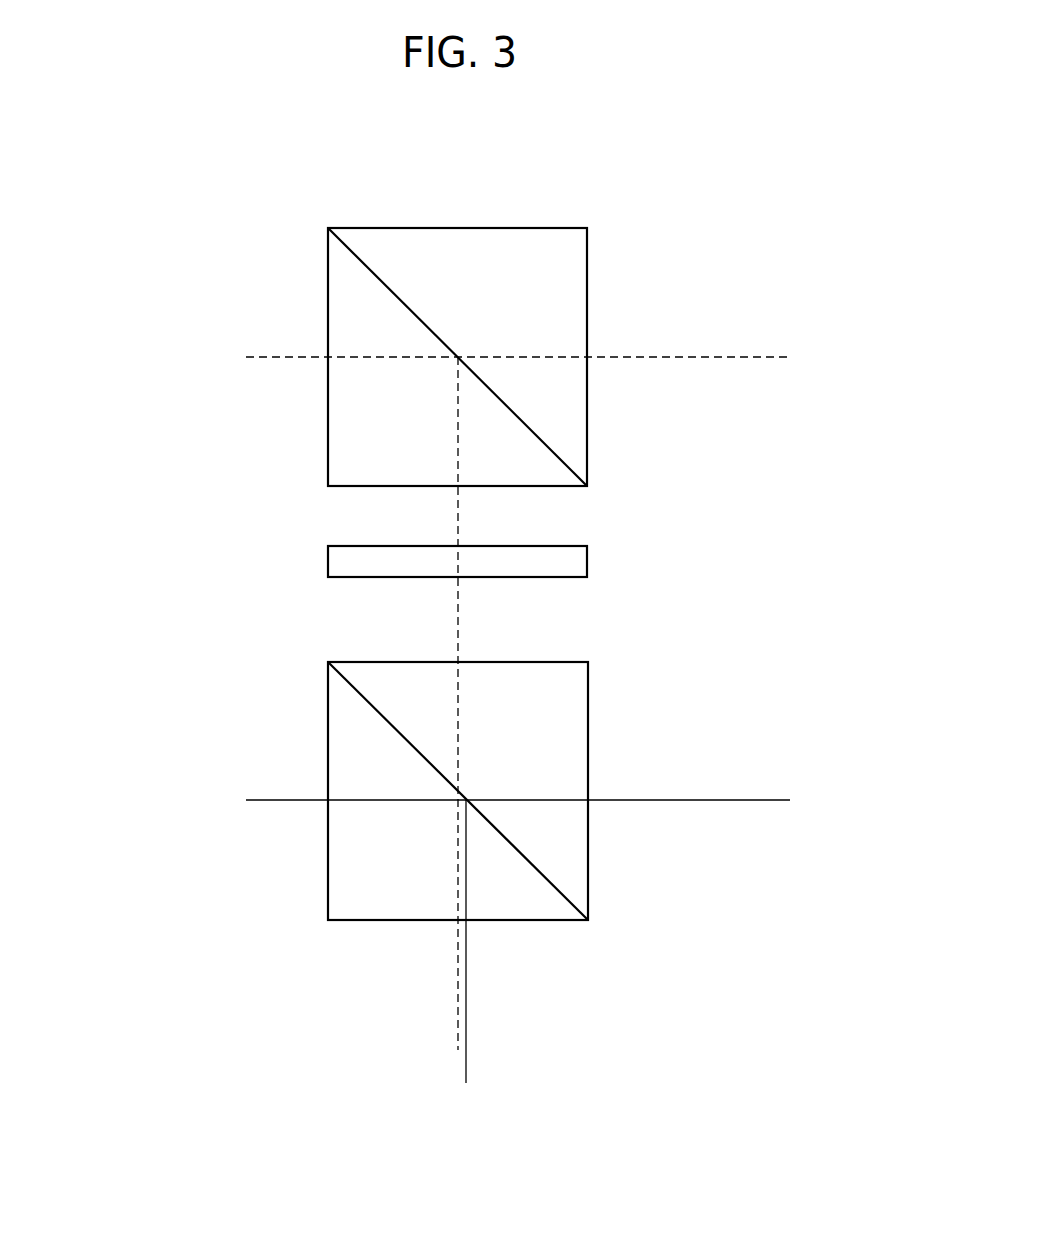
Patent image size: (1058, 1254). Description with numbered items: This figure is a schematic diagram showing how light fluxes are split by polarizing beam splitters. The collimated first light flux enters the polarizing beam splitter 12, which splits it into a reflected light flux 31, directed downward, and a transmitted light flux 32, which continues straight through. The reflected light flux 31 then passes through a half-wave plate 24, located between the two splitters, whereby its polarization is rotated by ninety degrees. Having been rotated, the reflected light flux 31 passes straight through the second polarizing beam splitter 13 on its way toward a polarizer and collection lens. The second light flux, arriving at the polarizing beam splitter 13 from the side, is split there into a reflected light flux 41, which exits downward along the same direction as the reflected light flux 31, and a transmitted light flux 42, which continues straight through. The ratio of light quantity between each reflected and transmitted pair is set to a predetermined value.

The polarizing beam splitter 12 is at (484, 204).
The polarizing beam splitter 13 is at (327, 693).
The λ/2 plate 24 is at (589, 560).
The reflected light flux 31 is at (458, 516).
The transmitted light flux 32 is at (711, 335).
The reflected light flux 41 is at (467, 1006).
The transmitted light flux 42 is at (722, 778).